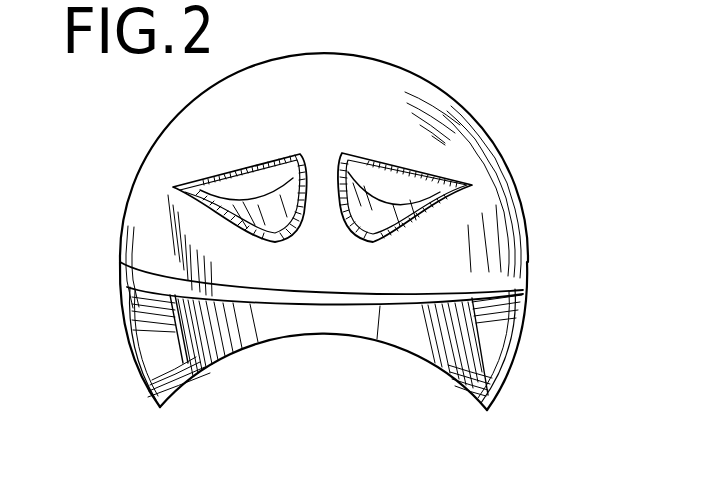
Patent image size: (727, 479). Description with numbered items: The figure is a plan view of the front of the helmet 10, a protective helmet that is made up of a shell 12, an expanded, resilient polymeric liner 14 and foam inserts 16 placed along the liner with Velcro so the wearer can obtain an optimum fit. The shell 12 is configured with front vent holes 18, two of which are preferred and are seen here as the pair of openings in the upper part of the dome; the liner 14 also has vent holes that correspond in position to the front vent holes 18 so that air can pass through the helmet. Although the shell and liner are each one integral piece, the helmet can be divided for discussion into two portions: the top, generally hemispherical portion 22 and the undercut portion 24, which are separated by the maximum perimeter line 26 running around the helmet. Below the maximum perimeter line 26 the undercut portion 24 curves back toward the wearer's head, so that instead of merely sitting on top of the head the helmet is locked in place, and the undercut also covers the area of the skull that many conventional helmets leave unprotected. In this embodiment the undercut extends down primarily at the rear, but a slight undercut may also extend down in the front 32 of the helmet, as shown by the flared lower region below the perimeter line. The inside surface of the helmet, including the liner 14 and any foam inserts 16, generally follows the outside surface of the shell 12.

The helmet 10 is at (520, 145).
The shell 12 is at (500, 226).
The liner 14 is at (473, 373).
The foam inserts 16 is at (453, 360).
The front vent holes 18 is at (272, 178).
The hemispherical portion 22 is at (123, 212).
The undercut portion 24 is at (151, 341).
The maximum perimeter line 26 is at (118, 263).
The front 32 is at (310, 300).